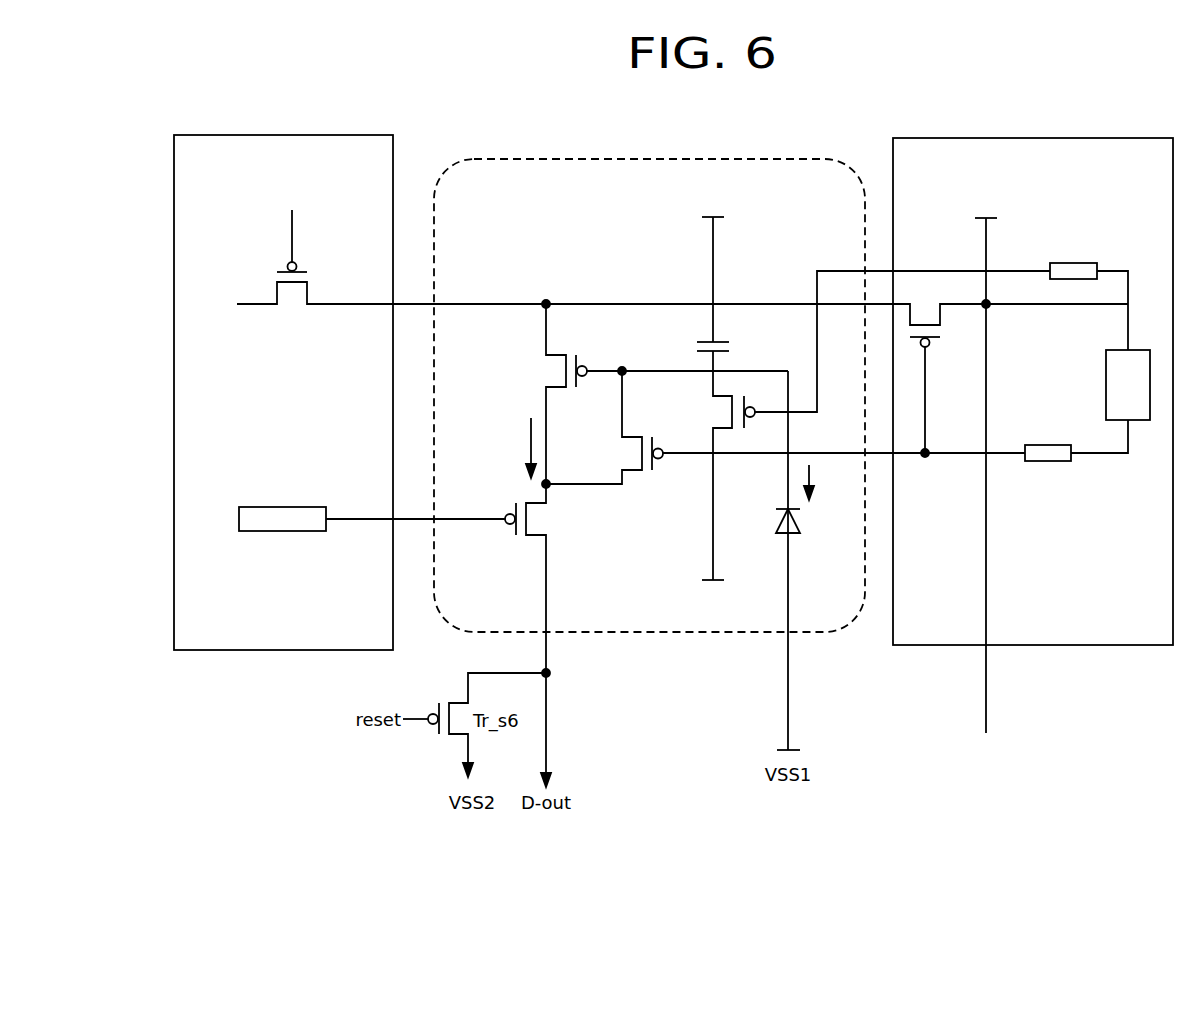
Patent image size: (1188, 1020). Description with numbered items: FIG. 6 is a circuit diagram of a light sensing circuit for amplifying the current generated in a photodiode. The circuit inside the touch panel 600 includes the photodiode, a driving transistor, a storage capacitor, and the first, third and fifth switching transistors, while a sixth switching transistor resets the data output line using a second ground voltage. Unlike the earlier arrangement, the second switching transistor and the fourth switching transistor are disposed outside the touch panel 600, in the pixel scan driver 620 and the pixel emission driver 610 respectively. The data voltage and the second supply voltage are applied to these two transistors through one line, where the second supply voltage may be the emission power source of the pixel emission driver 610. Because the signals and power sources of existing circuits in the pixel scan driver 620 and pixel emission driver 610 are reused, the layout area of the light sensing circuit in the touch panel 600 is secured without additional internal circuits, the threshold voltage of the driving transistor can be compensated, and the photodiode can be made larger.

The touch panel 600 is at (580, 159).
The pixel emission driver 610 is at (285, 135).
The pixel scan driver 620 is at (1037, 138).